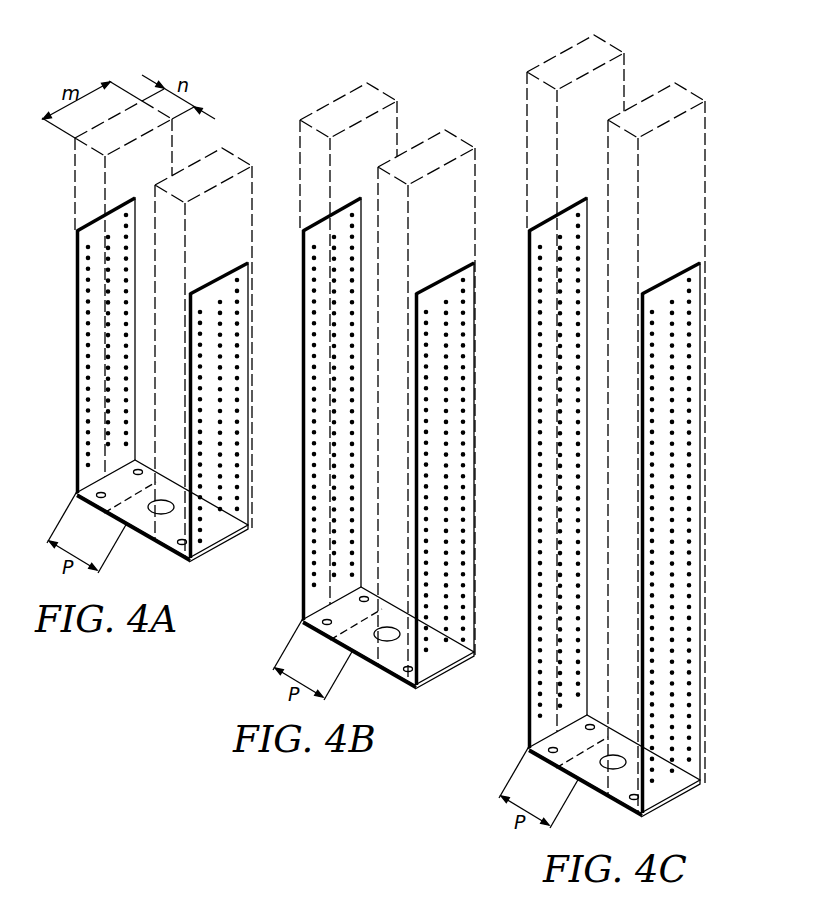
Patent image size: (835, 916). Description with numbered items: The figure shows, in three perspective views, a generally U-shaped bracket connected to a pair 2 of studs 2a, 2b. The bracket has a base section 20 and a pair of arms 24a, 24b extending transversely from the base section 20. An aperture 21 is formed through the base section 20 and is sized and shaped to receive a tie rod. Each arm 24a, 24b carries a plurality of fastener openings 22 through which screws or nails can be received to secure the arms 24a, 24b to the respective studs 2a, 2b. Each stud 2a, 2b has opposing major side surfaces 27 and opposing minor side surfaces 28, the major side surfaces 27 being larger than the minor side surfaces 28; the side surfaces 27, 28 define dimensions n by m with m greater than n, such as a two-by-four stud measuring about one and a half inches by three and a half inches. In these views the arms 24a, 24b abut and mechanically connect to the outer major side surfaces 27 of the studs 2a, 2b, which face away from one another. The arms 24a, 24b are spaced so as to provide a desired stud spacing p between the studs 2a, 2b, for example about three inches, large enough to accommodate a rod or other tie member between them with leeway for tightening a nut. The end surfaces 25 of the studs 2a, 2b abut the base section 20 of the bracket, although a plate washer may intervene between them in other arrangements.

In FIG. 4A, the pair of studs 2 is at (183, 128).
In FIG. 4A, the stud 2a is at (73, 165).
In FIG. 4B, the stud 2a is at (340, 97).
In FIG. 4C, the stud 2a is at (550, 152).
In FIG. 4A, the stud 2b is at (243, 157).
In FIG. 4B, the stud 2b is at (457, 130).
In FIG. 4C, the stud 2b is at (683, 150).
In FIG. 4A, the base section 20 is at (128, 510).
In FIG. 4B, the base section 20 is at (357, 643).
In FIG. 4C, the base section 20 is at (578, 763).
In FIG. 4A, the aperture 21 is at (152, 513).
In FIG. 4B, the aperture 21 is at (387, 634).
In FIG. 4C, the aperture 21 is at (605, 767).
In FIG. 4A, the fastener openings 22 is at (162, 378).
In FIG. 4B, the fastener openings 22 is at (445, 547).
In FIG. 4C, the fastener openings 22 is at (673, 525).
In FIG. 4A, the arm 24a is at (88, 300).
In FIG. 4B, the arm 24a is at (311, 371).
In FIG. 4C, the arm 24a is at (546, 403).
In FIG. 4A, the arm 24b is at (227, 284).
In FIG. 4B, the arm 24b is at (452, 354).
In FIG. 4C, the arm 24b is at (680, 688).
In FIG. 4A, the end surfaces 25 is at (165, 551).
In FIG. 4B, the end surfaces 25 is at (301, 632).
In FIG. 4C, the end surfaces 25 is at (526, 758).
In FIG. 4C, the major side surfaces 27 is at (692, 114).
In FIG. 4C, the minor side surfaces 28 is at (538, 100).